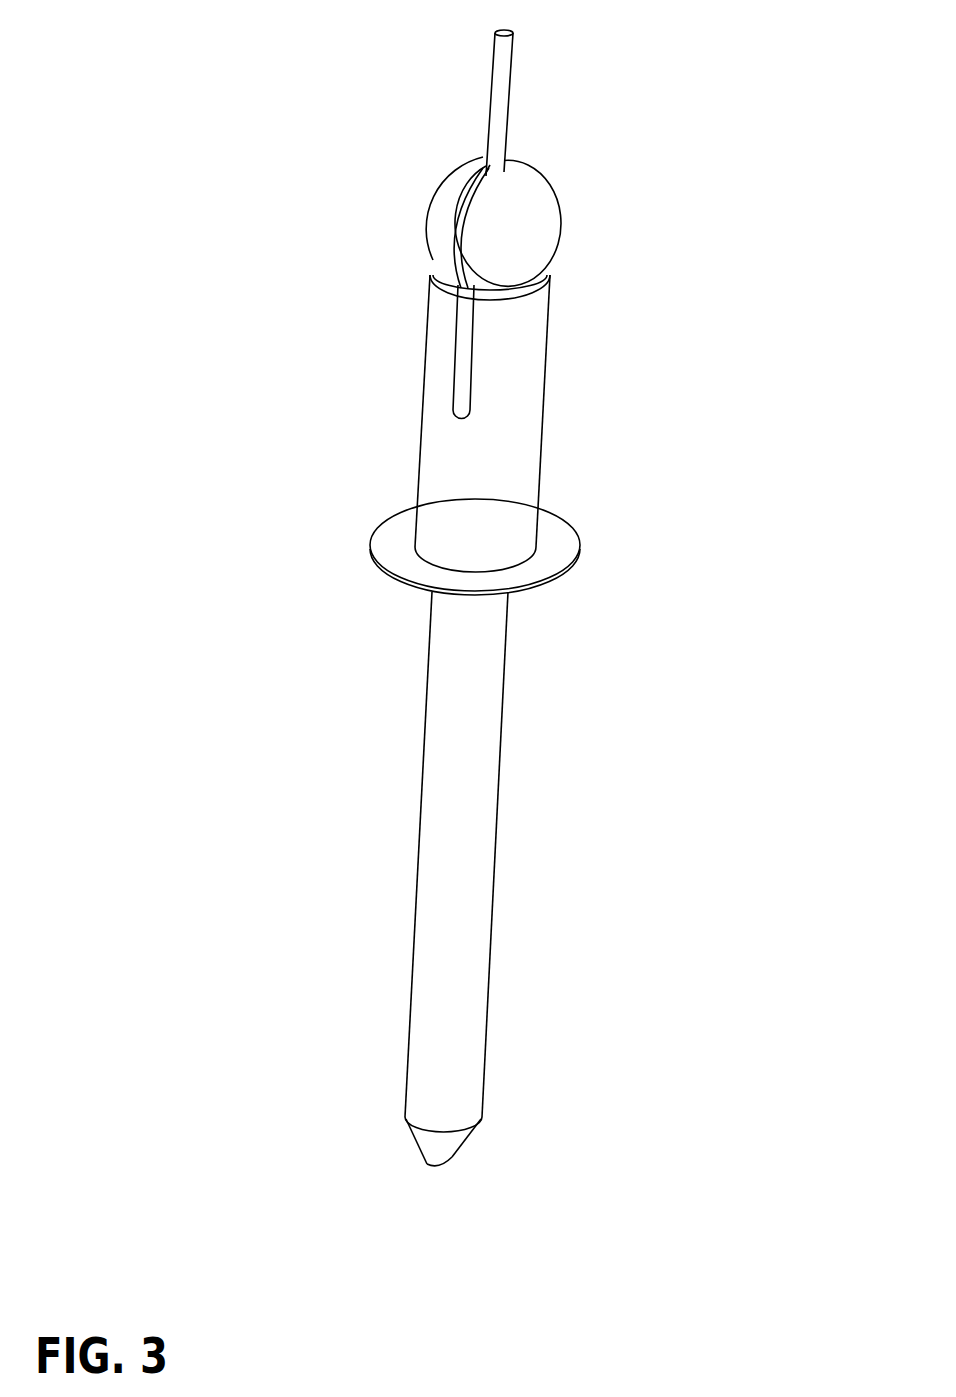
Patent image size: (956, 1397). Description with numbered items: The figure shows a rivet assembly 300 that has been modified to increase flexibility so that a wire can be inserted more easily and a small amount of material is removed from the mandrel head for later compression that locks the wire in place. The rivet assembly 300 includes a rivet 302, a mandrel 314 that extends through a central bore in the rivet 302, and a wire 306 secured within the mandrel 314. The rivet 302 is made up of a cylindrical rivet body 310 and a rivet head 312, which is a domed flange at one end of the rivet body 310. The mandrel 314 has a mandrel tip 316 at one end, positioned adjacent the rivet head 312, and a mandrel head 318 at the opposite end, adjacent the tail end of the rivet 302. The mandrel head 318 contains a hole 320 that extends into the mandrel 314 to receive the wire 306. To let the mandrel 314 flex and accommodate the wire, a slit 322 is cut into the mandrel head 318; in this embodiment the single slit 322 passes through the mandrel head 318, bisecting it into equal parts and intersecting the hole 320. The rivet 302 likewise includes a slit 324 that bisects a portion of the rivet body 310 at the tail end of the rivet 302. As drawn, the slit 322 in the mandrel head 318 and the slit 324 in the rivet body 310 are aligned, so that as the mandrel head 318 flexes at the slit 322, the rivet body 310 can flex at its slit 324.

The rivet assembly 300 is at (801, 247).
The rivet 302 is at (603, 377).
The wire 306 is at (513, 57).
The rivet body 310 is at (425, 387).
The rivet head 312 is at (578, 558).
The mandrel 314 is at (425, 733).
The mandrel tip 316 is at (416, 1145).
The mandrel head 318 is at (428, 217).
The hole 320 is at (483, 144).
The slit 322 is at (501, 240).
The slit 324 is at (499, 370).